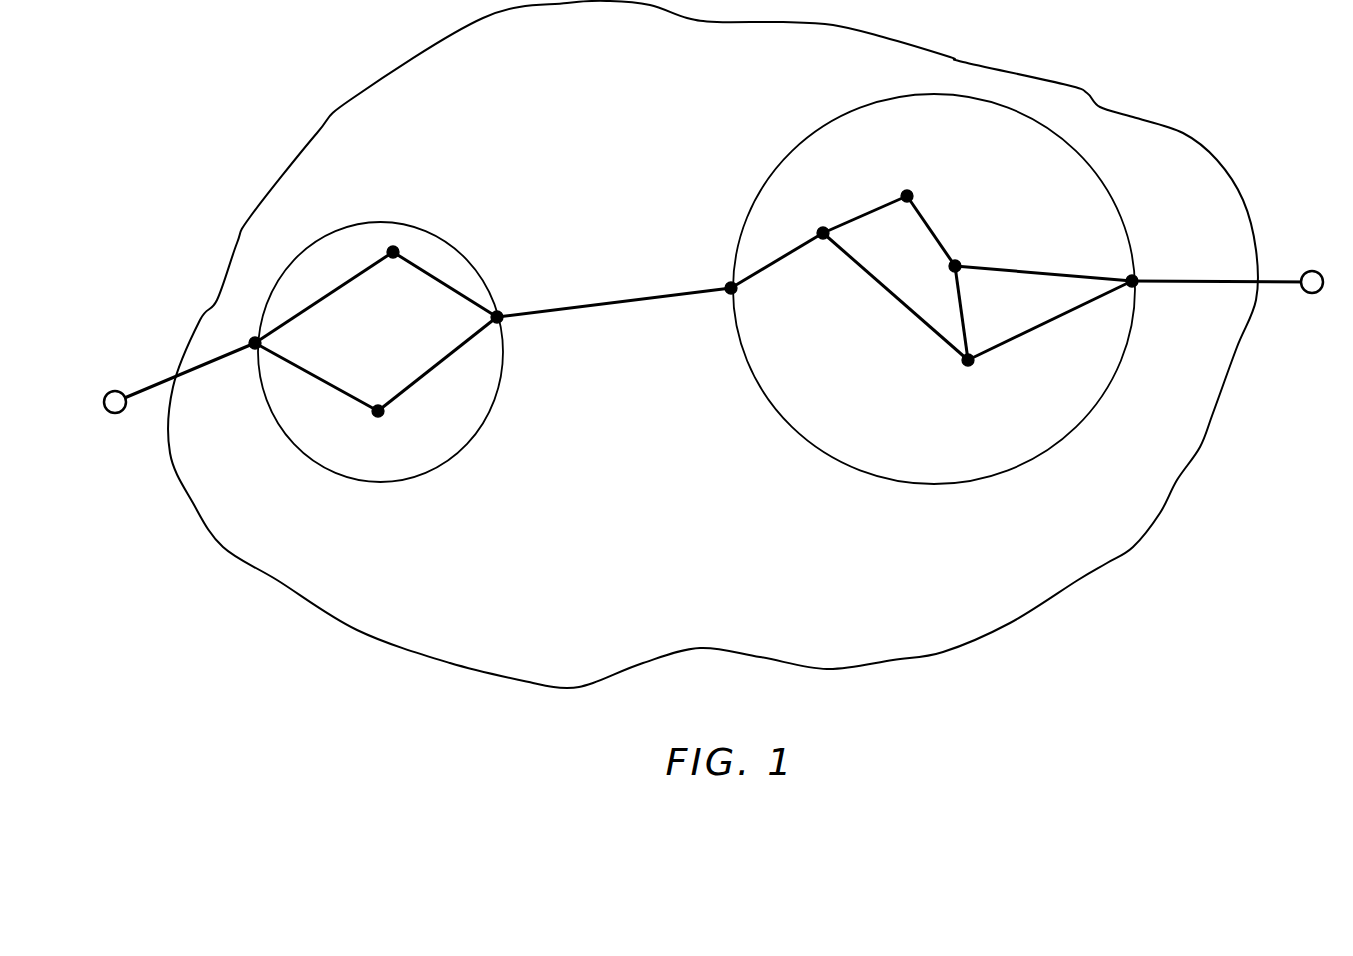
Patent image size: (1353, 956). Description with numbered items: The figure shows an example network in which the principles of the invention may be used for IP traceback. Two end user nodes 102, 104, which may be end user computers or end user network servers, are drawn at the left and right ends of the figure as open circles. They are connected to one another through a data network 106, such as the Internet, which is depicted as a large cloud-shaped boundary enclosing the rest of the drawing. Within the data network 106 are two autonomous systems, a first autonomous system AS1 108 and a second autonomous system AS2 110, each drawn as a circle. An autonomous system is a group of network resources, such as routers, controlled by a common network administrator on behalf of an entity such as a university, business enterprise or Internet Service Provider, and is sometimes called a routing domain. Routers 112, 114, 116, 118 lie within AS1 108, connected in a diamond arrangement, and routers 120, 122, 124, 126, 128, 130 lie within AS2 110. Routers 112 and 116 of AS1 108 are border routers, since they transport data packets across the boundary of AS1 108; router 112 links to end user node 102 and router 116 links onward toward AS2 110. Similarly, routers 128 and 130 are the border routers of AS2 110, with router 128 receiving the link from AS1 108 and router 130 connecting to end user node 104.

The end user node 102 is at (115, 413).
The end user node 104 is at (1312, 293).
The data network 106 is at (965, 62).
The autonomous system AS1 108 is at (381, 222).
The autonomous system AS2 110 is at (820, 125).
The router 112 is at (267, 345).
The router 114 is at (392, 258).
The router 116 is at (503, 315).
The router 118 is at (386, 413).
The router 120 is at (906, 191).
The router 122 is at (823, 228).
The router 124 is at (960, 260).
The router 126 is at (968, 367).
The router 128 is at (725, 295).
The router 130 is at (1140, 275).